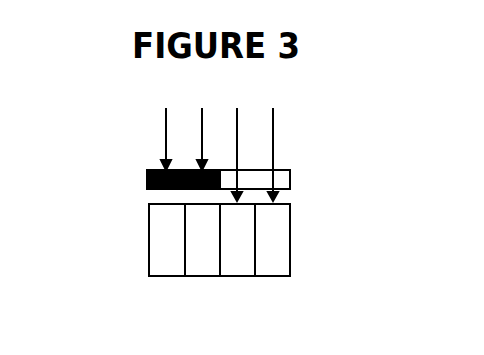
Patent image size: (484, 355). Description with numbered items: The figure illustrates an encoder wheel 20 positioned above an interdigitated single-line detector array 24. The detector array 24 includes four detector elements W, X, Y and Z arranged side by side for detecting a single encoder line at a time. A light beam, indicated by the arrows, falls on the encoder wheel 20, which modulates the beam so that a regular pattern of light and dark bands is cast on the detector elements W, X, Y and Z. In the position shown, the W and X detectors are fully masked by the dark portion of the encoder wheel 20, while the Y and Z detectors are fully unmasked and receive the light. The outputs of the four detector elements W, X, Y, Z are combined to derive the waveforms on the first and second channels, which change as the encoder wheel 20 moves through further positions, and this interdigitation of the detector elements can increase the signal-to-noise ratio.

The encoder wheel 20 is at (290, 174).
The detector array 24 is at (170, 240).
The detector element W is at (167, 240).
The detector element X is at (202, 240).
The detector element Y is at (237, 240).
The detector element Z is at (272, 240).